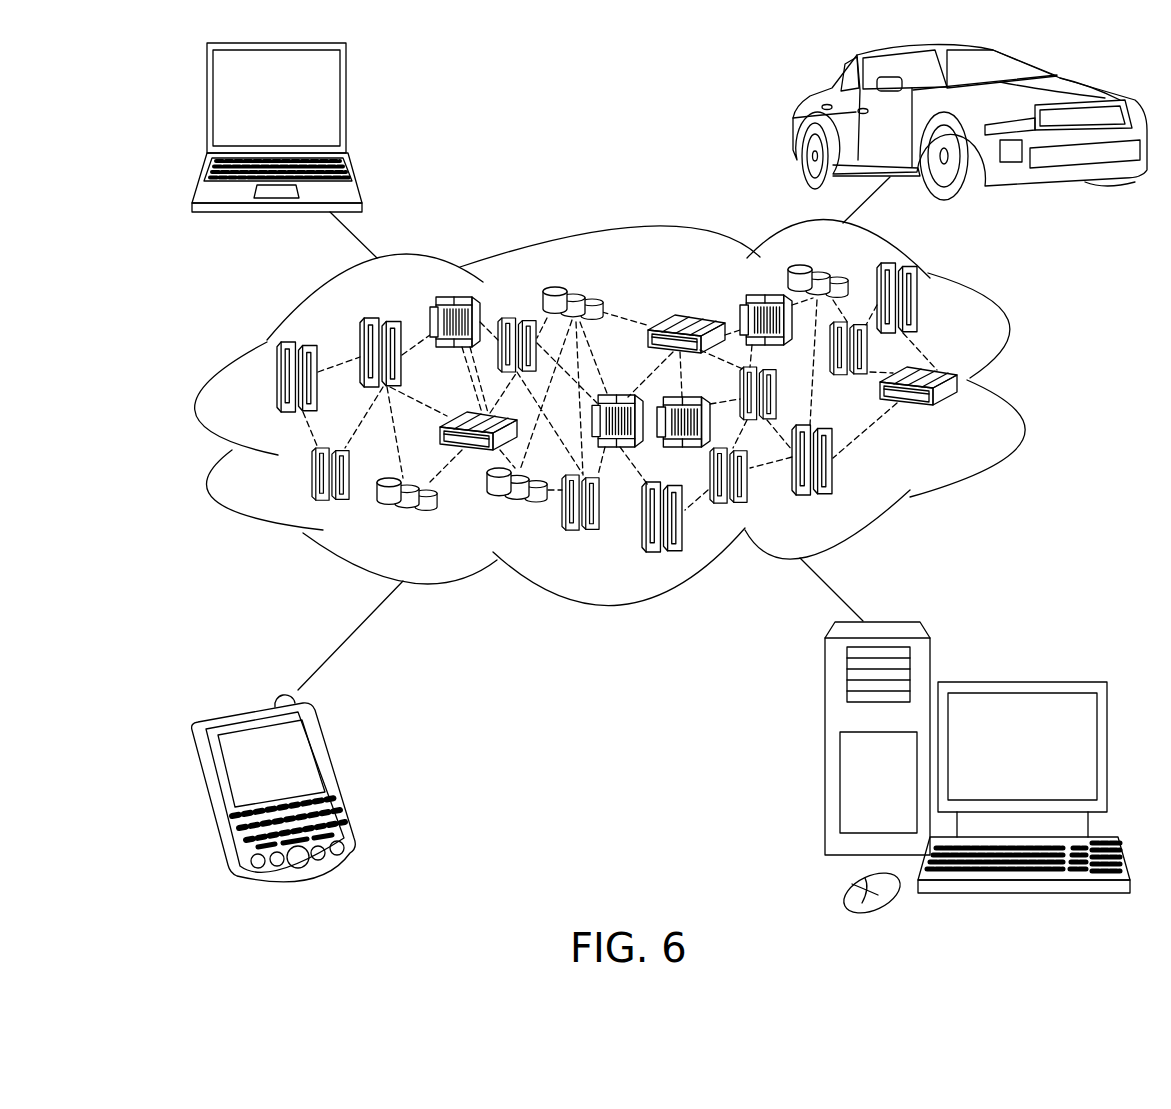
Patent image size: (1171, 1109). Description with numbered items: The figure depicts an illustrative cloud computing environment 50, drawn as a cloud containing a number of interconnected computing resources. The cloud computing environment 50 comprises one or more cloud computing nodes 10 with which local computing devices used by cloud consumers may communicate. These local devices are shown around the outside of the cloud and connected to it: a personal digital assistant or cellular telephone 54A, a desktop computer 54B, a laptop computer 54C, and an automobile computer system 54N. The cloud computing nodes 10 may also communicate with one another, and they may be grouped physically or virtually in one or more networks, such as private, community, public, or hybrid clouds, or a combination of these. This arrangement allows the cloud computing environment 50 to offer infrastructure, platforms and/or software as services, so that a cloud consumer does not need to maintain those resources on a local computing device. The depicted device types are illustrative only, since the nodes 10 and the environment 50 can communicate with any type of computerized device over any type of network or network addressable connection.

The personal digital assistant (PDA) or cellular telephone 54A is at (337, 777).
The desktop computer 54B is at (1018, 683).
The laptop computer 54C is at (346, 107).
The automobile computer system 54N is at (795, 119).
The cloud computing environment 50 is at (637, 412).
The cloud computing node 10 is at (968, 421).